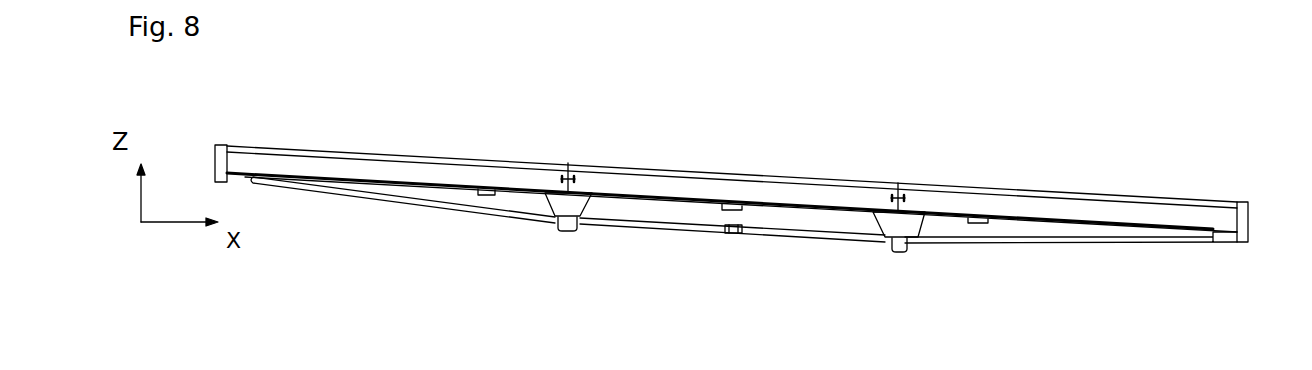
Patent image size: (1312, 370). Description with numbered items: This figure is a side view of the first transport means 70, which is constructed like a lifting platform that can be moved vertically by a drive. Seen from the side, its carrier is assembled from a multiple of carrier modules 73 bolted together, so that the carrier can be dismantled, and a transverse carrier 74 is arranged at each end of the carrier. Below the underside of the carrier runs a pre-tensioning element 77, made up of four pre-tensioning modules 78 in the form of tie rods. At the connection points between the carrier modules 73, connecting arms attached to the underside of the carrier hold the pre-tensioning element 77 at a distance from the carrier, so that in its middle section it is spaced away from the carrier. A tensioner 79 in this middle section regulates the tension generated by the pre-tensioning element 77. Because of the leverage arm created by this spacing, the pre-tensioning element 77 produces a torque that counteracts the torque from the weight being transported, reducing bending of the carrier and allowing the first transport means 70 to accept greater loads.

The first transport means 70 is at (1170, 104).
The carrier module 73 is at (333, 163).
The transverse carrier 74 is at (216, 145).
The pre-tensioning element 77 is at (602, 251).
The pre-tensioning module 78 is at (421, 201).
The tensioner 79 is at (737, 232).